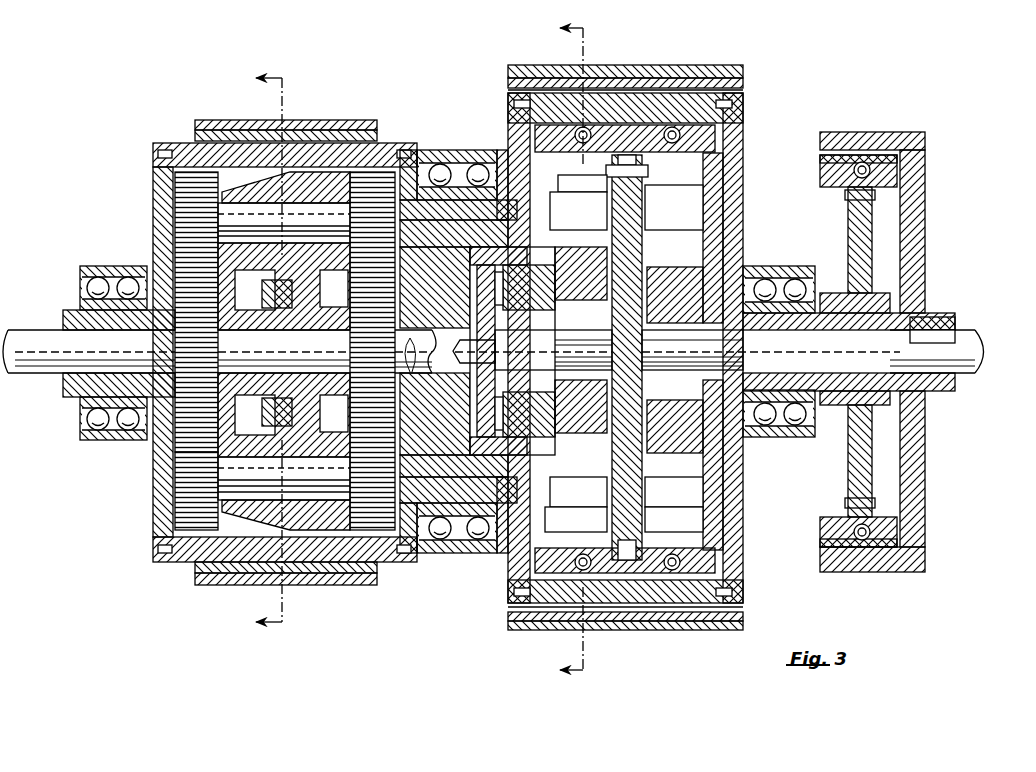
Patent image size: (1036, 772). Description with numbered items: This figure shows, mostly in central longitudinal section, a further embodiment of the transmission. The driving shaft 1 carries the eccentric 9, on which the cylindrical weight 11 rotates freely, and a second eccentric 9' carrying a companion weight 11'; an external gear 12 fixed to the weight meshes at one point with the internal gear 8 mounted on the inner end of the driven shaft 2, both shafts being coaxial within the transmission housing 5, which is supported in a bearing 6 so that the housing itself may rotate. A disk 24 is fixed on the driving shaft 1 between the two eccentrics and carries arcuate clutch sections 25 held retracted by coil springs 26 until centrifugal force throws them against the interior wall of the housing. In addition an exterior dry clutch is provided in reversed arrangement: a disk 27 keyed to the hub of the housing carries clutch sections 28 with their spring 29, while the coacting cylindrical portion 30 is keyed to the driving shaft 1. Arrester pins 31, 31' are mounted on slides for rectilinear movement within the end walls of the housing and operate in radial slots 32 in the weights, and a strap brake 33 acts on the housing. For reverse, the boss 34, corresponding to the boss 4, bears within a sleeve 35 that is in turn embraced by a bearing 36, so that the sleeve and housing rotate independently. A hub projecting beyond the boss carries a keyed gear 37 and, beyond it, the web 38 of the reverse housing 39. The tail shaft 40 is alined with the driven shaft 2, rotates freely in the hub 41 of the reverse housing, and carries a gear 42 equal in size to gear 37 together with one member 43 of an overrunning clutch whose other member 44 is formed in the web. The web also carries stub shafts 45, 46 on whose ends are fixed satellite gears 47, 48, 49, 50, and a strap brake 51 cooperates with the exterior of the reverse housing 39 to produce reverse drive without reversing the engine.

The driving shaft 1 is at (968, 330).
The driven shaft 2 is at (327, 348).
The boss 4 is at (557, 350).
The transmission housing 5 is at (745, 112).
The bearing 6 is at (800, 440).
The internal gear 8 is at (540, 460).
The eccentric portion 9 is at (532, 339).
The eccentric 9' is at (771, 350).
The cylindrical weight 11 is at (576, 523).
The weight 11' is at (674, 523).
The external gear 12 is at (510, 392).
The disk 24 is at (646, 190).
The arcuate clutch sections 25 is at (715, 140).
The coil springs 26 is at (675, 128).
The disk 27 is at (850, 232).
The clutch sections 28 is at (832, 178).
The spring 29 is at (864, 160).
The cylindrical portion 30 is at (885, 572).
The arrester pin 31 is at (578, 349).
The arrester pin 31' is at (674, 346).
The radial slot 32 is at (582, 183).
The strap brake 33 is at (630, 630).
The boss 34 is at (455, 530).
The sleeve 35 is at (462, 210).
The bearing 36 is at (450, 162).
The gear 37 is at (305, 289).
The web 38 is at (303, 165).
The reverse housing 39 is at (180, 143).
The tail shaft 40 is at (38, 332).
The hub 41 is at (80, 290).
The gear 42 is at (195, 380).
The overrunning clutch member 43 is at (284, 286).
The overrunning clutch member 44 is at (284, 415).
The stub shaft 45 is at (284, 222).
The stub shaft 46 is at (284, 493).
The satellite gear 47 is at (200, 195).
The satellite gear 48 is at (372, 180).
The satellite gear 49 is at (182, 495).
The satellite gear 50 is at (384, 555).
The strap brake 51 is at (212, 120).